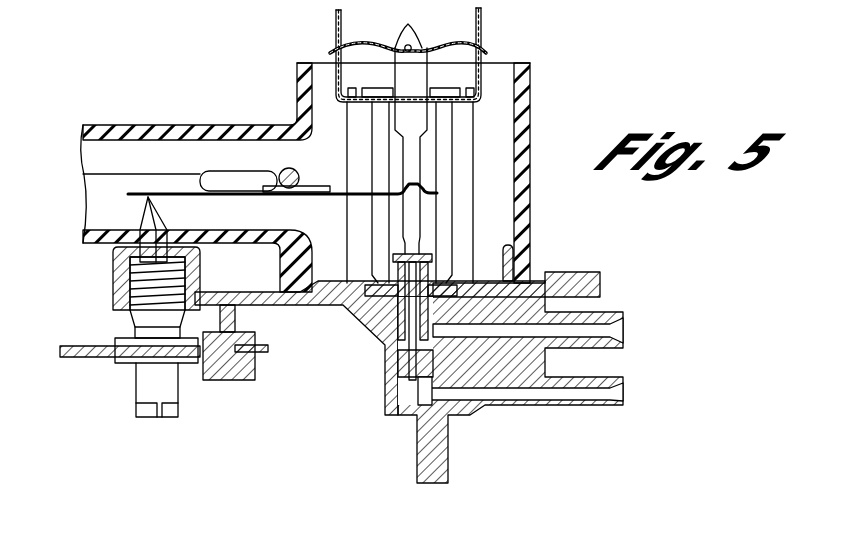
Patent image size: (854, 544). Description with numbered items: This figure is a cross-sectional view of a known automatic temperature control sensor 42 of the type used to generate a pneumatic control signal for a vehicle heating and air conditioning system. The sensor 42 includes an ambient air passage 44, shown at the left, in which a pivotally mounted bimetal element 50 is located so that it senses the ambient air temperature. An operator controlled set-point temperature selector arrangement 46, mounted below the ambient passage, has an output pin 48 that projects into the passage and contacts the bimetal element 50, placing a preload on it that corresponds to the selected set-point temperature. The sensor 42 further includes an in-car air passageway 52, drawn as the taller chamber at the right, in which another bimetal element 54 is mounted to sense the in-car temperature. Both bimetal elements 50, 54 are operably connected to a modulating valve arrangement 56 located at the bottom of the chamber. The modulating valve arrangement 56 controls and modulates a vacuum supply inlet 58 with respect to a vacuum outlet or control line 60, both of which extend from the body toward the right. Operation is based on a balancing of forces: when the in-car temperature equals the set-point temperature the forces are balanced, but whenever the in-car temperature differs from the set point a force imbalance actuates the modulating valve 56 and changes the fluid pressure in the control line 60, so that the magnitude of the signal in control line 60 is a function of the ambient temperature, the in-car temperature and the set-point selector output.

The automatic temperature control sensor 42 is at (293, 378).
The ambient air passage 44 is at (100, 152).
The set-point temperature selector arrangement 46 is at (125, 375).
The output pin 48 is at (146, 211).
The bimetal element 50 is at (203, 180).
The in-car air passageway 52 is at (513, 70).
The bimetal element 54 is at (452, 45).
The modulating valve arrangement 56 is at (375, 362).
The vacuum supply inlet 58 is at (627, 392).
The vacuum outlet or control line 60 is at (625, 323).